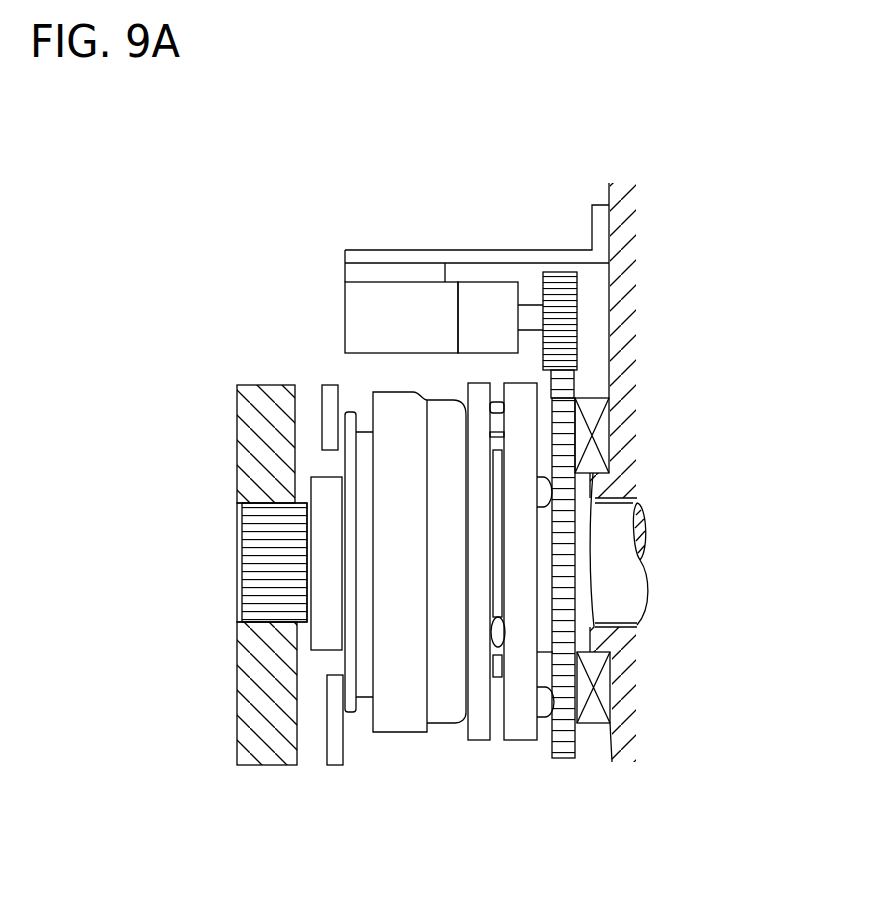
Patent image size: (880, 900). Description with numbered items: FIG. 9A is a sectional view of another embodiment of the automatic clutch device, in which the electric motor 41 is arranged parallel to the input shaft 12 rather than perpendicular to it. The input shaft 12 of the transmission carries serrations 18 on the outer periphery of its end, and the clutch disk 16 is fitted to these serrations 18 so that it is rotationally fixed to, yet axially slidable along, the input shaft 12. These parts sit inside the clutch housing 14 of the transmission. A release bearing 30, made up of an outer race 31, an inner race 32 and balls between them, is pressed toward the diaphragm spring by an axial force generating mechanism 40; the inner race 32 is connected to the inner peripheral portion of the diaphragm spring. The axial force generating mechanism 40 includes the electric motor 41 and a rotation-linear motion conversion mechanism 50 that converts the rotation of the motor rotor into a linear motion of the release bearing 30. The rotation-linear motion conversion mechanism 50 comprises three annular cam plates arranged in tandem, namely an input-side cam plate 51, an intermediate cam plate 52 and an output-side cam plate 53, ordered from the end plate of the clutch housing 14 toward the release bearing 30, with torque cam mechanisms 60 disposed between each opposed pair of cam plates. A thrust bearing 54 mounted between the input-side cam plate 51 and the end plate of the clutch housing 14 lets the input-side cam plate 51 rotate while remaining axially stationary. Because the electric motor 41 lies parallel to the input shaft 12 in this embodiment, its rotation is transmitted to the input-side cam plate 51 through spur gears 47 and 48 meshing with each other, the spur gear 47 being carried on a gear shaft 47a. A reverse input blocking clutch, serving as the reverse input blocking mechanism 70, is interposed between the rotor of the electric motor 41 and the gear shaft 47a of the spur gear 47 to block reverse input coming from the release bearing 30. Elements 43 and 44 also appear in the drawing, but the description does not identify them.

The input shaft 12 is at (642, 573).
The clutch housing 14 is at (622, 188).
The clutch disk 16 is at (245, 408).
The serrations 18 is at (248, 540).
The release bearing 30 is at (355, 590).
The outer race 31 is at (405, 740).
The inner race 32 is at (366, 735).
The axial force generating mechanism 40 is at (380, 258).
The electric motor 41 is at (398, 287).
The bracket 43 is at (533, 258).
The gear shaft 44 is at (585, 363).
The spur gear 47 is at (570, 320).
The gear shaft 47a is at (533, 310).
The spur gear 48 is at (565, 417).
The rotation-linear motion conversion mechanism 50 is at (530, 750).
The input-side cam plate 51 is at (575, 740).
The intermediate cam plate 52 is at (520, 742).
The output-side cam plate 53 is at (482, 743).
The thrust bearing 54 is at (603, 440).
The torque cam mechanisms 60 is at (559, 703).
The reverse input blocking mechanism 70 is at (487, 278).